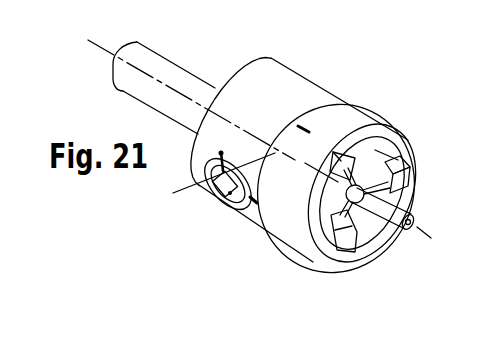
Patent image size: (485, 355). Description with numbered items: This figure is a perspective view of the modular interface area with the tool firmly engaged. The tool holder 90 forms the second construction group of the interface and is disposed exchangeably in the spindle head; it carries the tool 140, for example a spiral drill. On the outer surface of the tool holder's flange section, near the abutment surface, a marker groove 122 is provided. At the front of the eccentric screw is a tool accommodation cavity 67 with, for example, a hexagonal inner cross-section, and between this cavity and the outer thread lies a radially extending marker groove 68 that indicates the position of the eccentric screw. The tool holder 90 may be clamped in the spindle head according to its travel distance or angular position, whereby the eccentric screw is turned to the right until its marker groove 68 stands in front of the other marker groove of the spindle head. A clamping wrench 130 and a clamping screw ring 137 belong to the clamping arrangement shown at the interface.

The marker groove 68 is at (203, 247).
The tool accommodation cavity 67 is at (230, 207).
The marker groove 122 is at (301, 132).
The tool holder 90 is at (294, 256).
The clamping screw ring 137 is at (325, 226).
The clamping wrench 130 is at (361, 217).
The tool 140 is at (386, 222).